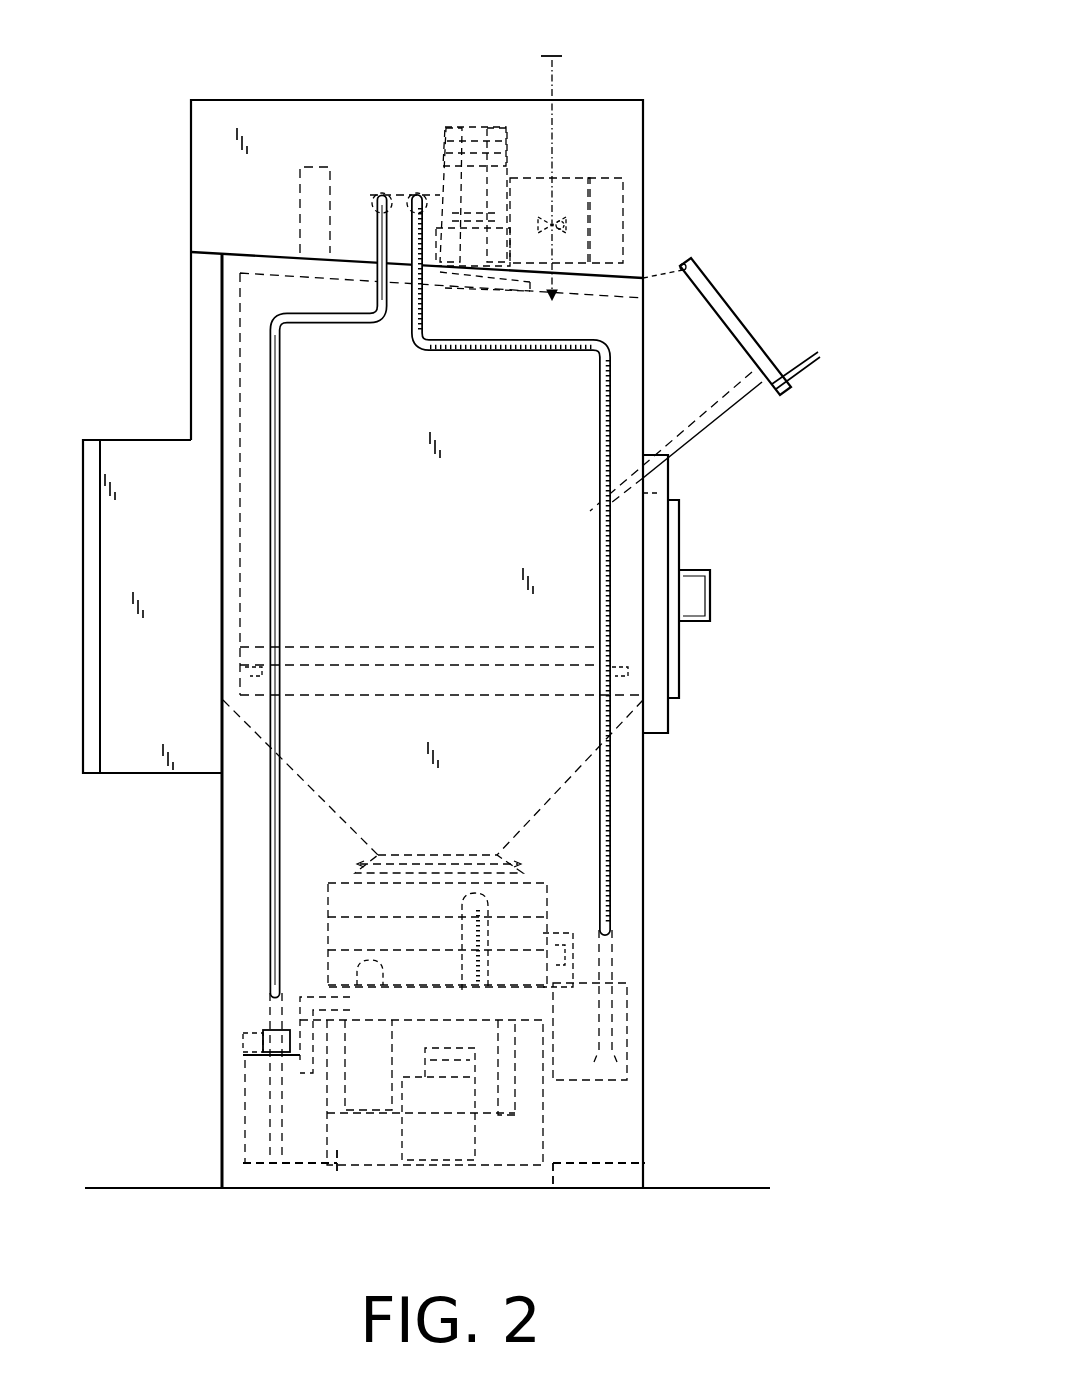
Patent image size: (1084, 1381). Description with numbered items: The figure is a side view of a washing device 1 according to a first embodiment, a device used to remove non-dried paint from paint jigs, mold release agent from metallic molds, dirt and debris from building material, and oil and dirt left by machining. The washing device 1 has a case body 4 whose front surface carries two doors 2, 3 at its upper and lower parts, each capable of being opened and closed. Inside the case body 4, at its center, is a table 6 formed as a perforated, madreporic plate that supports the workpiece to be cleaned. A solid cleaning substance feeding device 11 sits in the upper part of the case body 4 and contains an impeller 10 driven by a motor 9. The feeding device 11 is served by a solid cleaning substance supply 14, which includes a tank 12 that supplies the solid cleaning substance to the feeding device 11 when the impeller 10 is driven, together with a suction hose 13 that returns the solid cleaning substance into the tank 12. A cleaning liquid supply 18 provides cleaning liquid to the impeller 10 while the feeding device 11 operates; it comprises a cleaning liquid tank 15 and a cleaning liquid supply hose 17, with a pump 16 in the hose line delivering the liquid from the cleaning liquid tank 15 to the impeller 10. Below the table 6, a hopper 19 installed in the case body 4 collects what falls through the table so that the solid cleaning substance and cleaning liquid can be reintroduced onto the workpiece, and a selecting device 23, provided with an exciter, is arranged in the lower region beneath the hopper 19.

The washing device 1 is at (745, 87).
The door 2 is at (727, 318).
The door 3 is at (668, 556).
The case body 4 is at (222, 387).
The table 6 is at (392, 645).
The motor 9 is at (585, 192).
The impeller 10 is at (485, 125).
The solid cleaning substance feeding device 11 is at (456, 158).
The tank 12 is at (617, 1082).
The suction hose 13 is at (613, 838).
The solid cleaning substance supply 14 is at (630, 1008).
The cleaning liquid tank 15 is at (250, 1127).
The pump 16 is at (263, 1036).
The cleaning liquid supply hose 17 is at (272, 919).
The cleaning liquid supply 18 is at (245, 1070).
The hopper 19 is at (352, 826).
The selecting device 23 is at (548, 893).